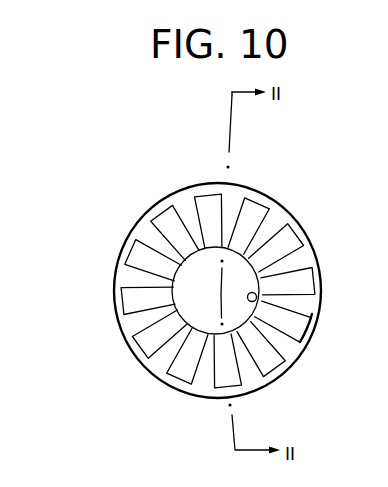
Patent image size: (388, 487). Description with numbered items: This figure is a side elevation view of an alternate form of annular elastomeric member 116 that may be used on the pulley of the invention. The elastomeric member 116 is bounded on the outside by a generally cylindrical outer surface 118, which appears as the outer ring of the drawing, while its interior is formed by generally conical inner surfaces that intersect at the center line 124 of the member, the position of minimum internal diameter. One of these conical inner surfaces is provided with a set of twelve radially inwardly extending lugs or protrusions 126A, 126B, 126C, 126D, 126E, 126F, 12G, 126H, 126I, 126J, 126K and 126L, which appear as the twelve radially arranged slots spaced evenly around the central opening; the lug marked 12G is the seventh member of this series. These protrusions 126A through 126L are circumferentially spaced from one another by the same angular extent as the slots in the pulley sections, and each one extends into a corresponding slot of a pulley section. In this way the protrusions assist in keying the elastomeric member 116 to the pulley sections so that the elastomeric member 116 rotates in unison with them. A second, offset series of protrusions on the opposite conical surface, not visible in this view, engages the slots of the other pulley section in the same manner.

The annular elastomeric member 116 is at (131, 325).
The cylindrical outer surface 118 is at (281, 202).
The center line 124 is at (303, 320).
The protrusion 126A is at (230, 200).
The protrusion 126B is at (285, 214).
The protrusion 126C is at (293, 250).
The protrusion 126D is at (318, 305).
The protrusion 126E is at (283, 347).
The protrusion 126F is at (258, 372).
The protrusion 12G is at (207, 378).
The protrusion 126H is at (157, 375).
The protrusion 126I is at (130, 334).
The protrusion 126J is at (128, 283).
The protrusion 126K is at (140, 230).
The protrusion 126L is at (185, 202).